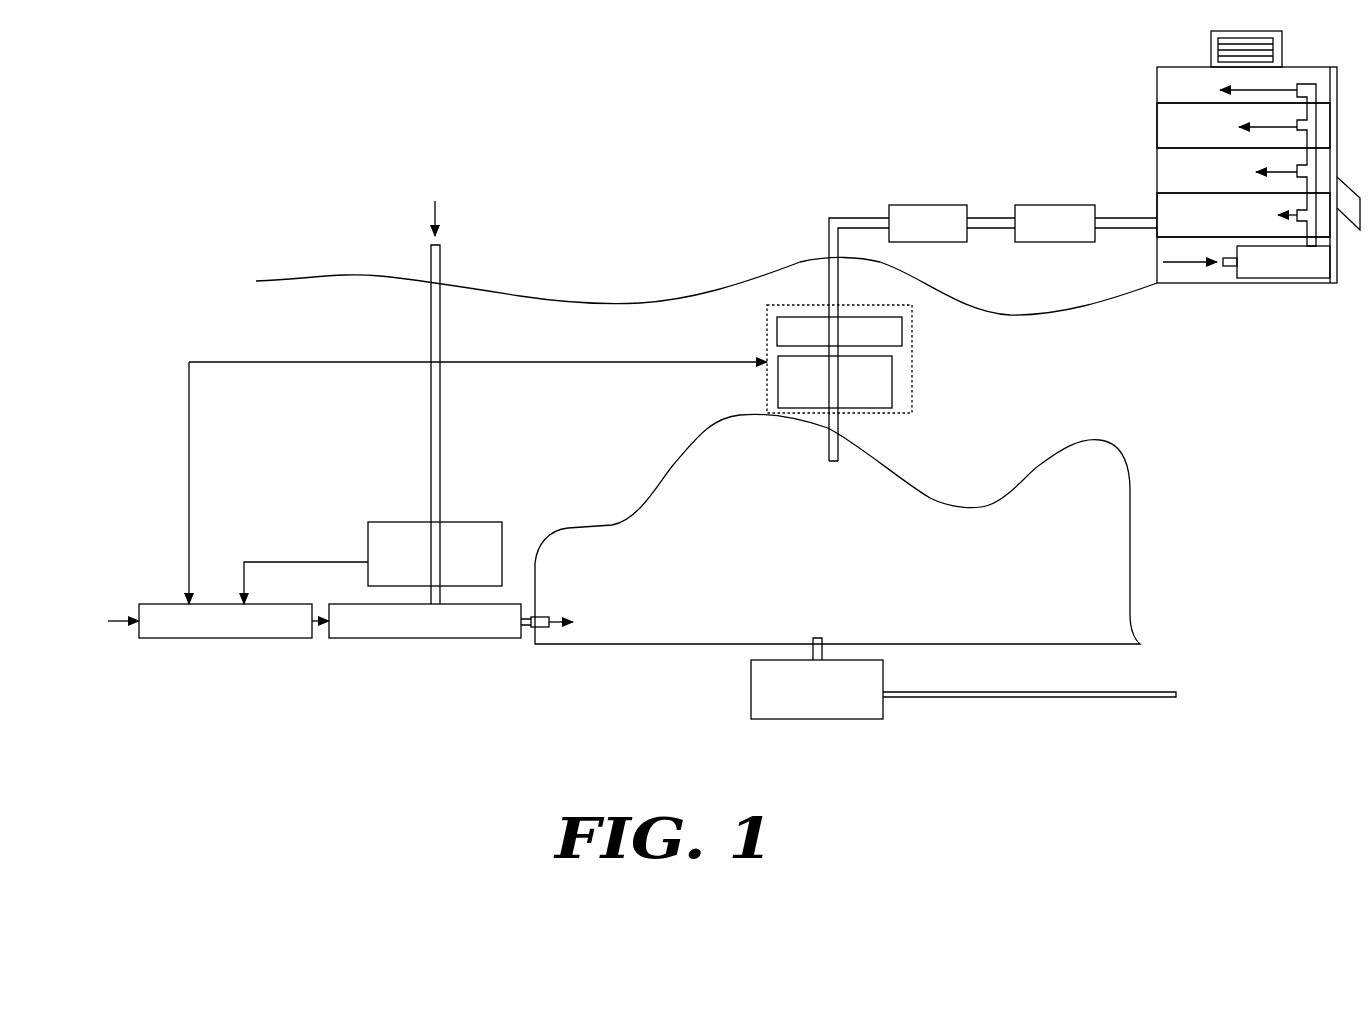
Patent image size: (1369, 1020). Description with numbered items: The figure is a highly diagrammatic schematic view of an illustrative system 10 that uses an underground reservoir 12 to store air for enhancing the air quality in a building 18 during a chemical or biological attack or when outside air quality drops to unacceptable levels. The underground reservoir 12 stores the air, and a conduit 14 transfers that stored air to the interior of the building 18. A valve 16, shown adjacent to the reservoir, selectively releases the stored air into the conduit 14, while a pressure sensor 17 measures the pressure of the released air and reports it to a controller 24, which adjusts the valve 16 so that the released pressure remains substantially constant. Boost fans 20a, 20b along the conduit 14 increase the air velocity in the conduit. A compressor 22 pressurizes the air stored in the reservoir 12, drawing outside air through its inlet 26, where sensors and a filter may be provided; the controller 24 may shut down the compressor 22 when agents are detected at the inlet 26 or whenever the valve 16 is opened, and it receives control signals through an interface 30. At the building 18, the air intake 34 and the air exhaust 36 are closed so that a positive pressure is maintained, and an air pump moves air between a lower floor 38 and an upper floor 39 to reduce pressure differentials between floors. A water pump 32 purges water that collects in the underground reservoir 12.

The system 10 is at (453, 137).
The underground reservoir 12 is at (1107, 492).
The conduit 14 is at (856, 222).
The valve 16 is at (880, 388).
The pressure sensor 17 is at (777, 324).
The building 18 is at (1187, 175).
The boost fan 20a is at (950, 207).
The boost fan 20b is at (1068, 205).
The compressor 22 is at (422, 636).
The controller 24 is at (153, 636).
The inlet 26 is at (435, 441).
The interface 30 is at (116, 620).
The water pump 32 is at (781, 708).
The air intake 34 is at (1218, 45).
The air exhaust 36 is at (1343, 200).
The lower floor 38 is at (1243, 215).
The upper floor 39 is at (1243, 125).